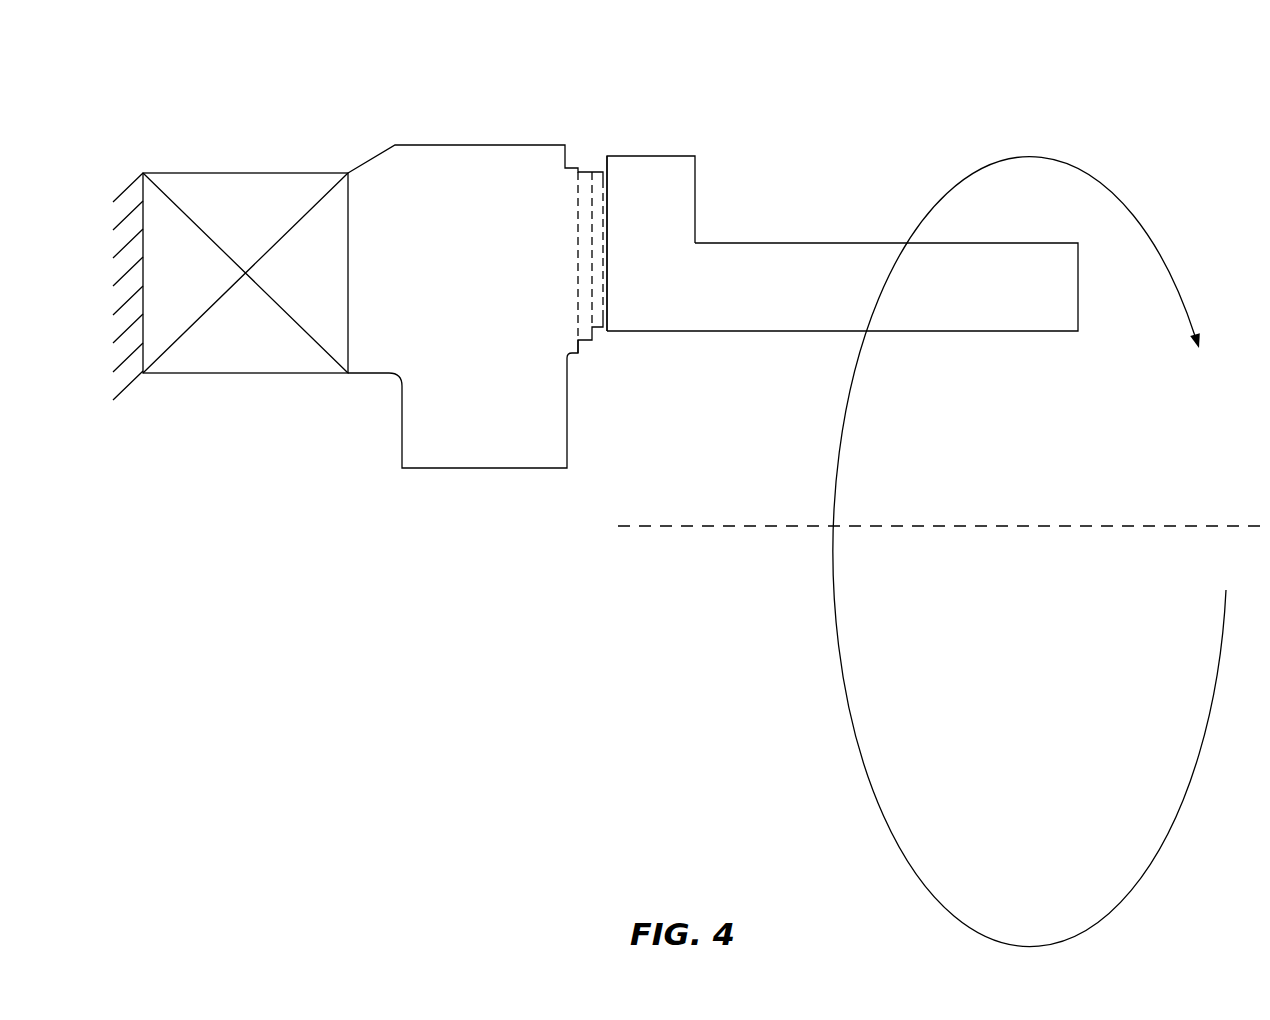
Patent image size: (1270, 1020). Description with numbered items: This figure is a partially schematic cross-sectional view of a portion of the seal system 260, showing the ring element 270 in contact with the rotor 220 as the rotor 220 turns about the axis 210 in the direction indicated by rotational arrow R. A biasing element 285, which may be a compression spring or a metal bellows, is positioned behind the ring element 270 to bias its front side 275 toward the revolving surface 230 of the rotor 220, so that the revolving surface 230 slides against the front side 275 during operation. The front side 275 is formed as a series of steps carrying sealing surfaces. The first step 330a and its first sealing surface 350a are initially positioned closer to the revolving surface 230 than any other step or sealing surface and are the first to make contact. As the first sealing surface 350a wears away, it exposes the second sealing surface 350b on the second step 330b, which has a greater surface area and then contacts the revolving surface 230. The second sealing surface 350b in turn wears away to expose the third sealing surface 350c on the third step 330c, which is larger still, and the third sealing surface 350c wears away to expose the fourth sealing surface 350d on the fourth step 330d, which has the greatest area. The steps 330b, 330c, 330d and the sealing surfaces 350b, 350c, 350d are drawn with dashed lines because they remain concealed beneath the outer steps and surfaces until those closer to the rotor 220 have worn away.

The seal system 260 is at (134, 75).
The biasing element 285 is at (232, 189).
The ring element 270 is at (432, 358).
The front side 275 is at (594, 368).
The fourth step 330d is at (514, 212).
The fourth sealing surface 350d is at (577, 190).
The third step 330c is at (545, 249).
The third sealing surface 350c is at (592, 200).
The second step 330b is at (555, 257).
The second sealing surface 350b is at (602, 288).
The first step 330a is at (677, 243).
The first sealing surface 350a is at (608, 252).
The revolving surface 230 is at (609, 218).
The rotor 220 is at (820, 258).
The axis 210 is at (1135, 525).
The rotational arrow R is at (1106, 184).